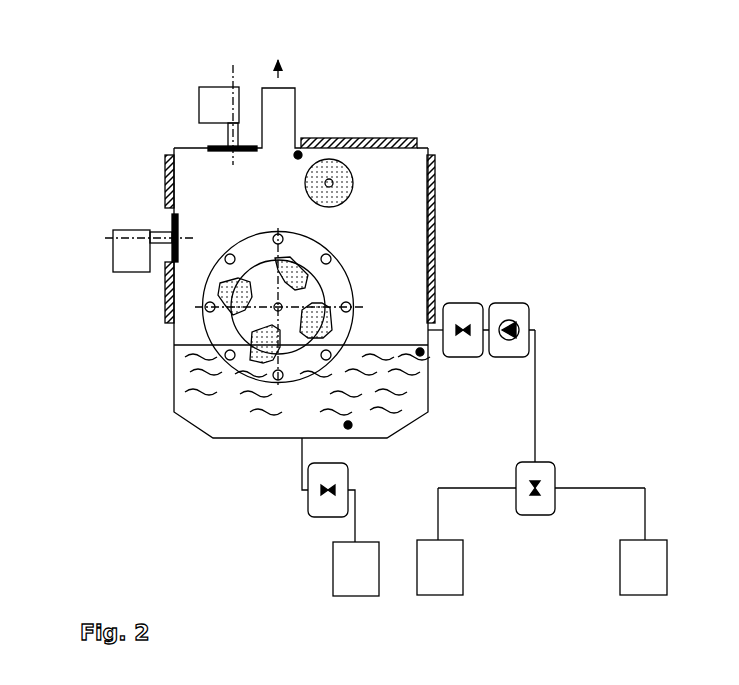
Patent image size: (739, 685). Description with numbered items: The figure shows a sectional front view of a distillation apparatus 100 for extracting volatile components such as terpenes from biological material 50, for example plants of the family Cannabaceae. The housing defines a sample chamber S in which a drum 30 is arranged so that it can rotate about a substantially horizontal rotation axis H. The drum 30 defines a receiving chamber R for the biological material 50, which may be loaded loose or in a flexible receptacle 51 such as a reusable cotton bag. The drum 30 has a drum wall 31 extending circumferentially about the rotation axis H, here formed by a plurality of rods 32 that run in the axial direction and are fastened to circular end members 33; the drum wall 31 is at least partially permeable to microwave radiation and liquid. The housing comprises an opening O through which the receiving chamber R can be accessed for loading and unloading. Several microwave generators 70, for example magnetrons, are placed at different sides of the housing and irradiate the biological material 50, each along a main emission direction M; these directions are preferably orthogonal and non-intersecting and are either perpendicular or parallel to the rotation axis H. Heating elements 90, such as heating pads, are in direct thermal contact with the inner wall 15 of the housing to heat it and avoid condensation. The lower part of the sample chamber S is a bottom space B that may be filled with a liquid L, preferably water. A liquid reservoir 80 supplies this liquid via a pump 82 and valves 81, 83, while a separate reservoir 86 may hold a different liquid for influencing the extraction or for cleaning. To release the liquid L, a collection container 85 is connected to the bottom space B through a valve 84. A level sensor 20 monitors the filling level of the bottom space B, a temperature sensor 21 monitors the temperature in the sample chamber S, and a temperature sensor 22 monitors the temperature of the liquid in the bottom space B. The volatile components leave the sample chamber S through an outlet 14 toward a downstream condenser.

The distillation apparatus 100 is at (556, 70).
The outlet 14 is at (296, 88).
The inner wall 15 is at (178, 167).
The level sensor 20 is at (422, 355).
The temperature sensor 21 is at (298, 151).
The temperature sensor 22 is at (350, 428).
The drum 30 is at (440, 267).
The drum wall 31 is at (205, 342).
The rods 32 is at (242, 334).
The circular end members 33 is at (217, 319).
The biological material 50 is at (300, 258).
The flexible receptacle 51 is at (340, 327).
The microwave generator 70 is at (227, 105).
The liquid reservoir 80 is at (454, 585).
The valve 81 is at (547, 470).
The pump 82 is at (522, 313).
The valve 83 is at (470, 313).
The valve 84 is at (320, 505).
The collection container 85 is at (369, 582).
The separate reservoir 86 is at (657, 585).
The heating element 90 is at (164, 168).
The main emission direction M is at (232, 71).
The liquid L is at (233, 400).
The opening O is at (247, 329).
The rotation axis H is at (374, 264).
The receiving chamber R is at (301, 335).
The sample chamber S is at (230, 225).
The bottom space B is at (312, 411).